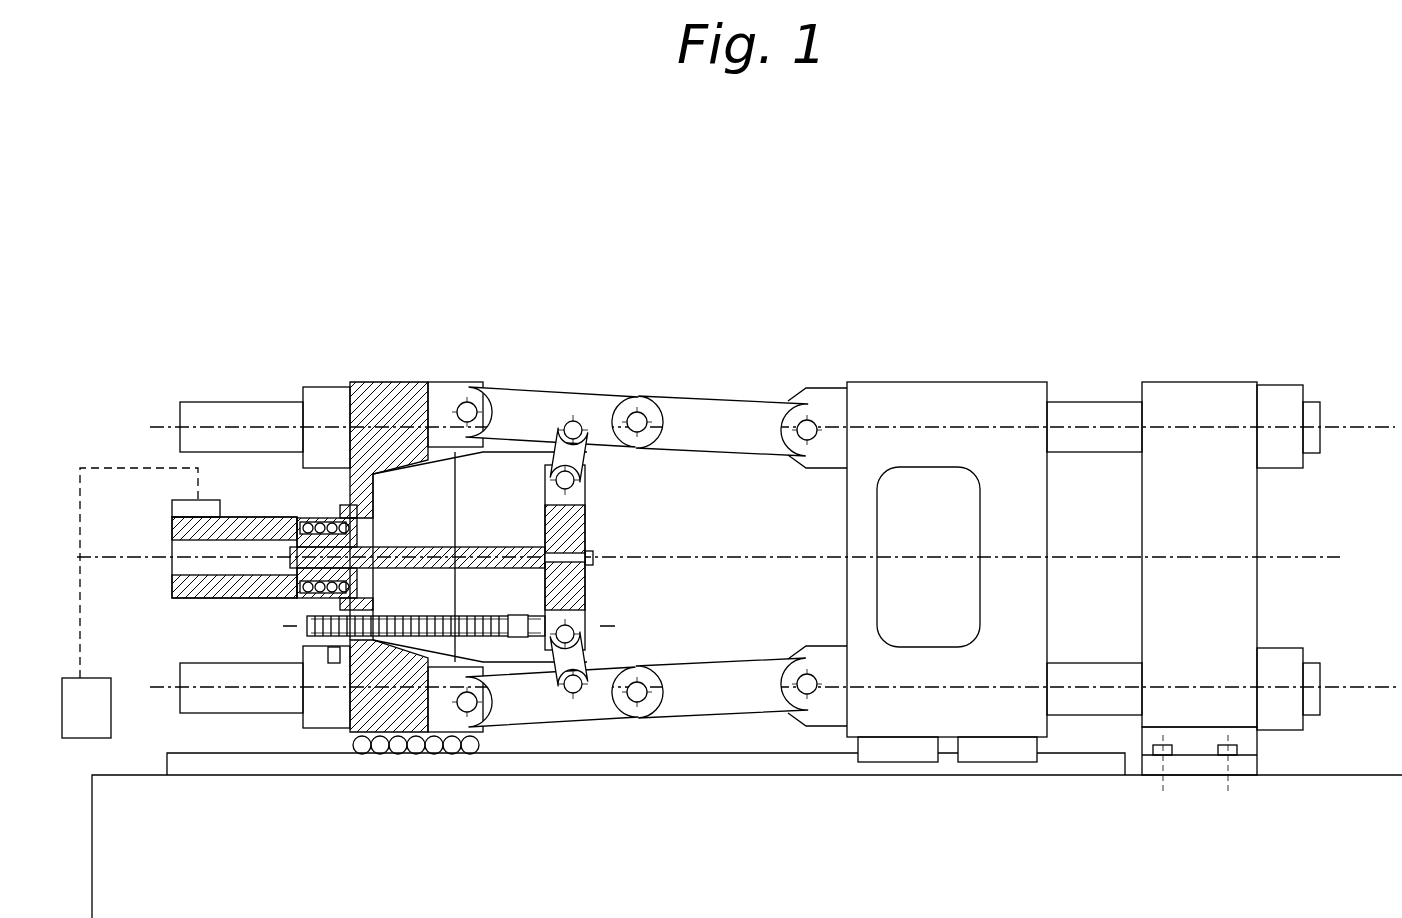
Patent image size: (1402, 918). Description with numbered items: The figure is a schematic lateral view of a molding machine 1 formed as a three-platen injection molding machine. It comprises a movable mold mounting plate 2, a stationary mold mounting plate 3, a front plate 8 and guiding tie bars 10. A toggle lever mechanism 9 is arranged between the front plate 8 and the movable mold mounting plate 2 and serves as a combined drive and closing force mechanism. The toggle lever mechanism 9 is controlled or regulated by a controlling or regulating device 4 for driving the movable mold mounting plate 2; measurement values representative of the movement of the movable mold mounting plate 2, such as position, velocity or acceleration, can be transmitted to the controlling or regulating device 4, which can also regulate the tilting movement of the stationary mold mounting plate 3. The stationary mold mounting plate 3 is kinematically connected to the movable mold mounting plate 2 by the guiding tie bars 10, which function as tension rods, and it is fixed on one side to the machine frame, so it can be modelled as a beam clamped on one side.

The molding machine 1 is at (1121, 264).
The movable mold mounting plate 2 is at (980, 410).
The stationary mold mounting plate 3 is at (1223, 400).
The controlling or regulating device 4 is at (130, 603).
The front plate 8 is at (388, 400).
The toggle lever mechanism 9 is at (604, 355).
The guiding tie bars 10 is at (203, 402).